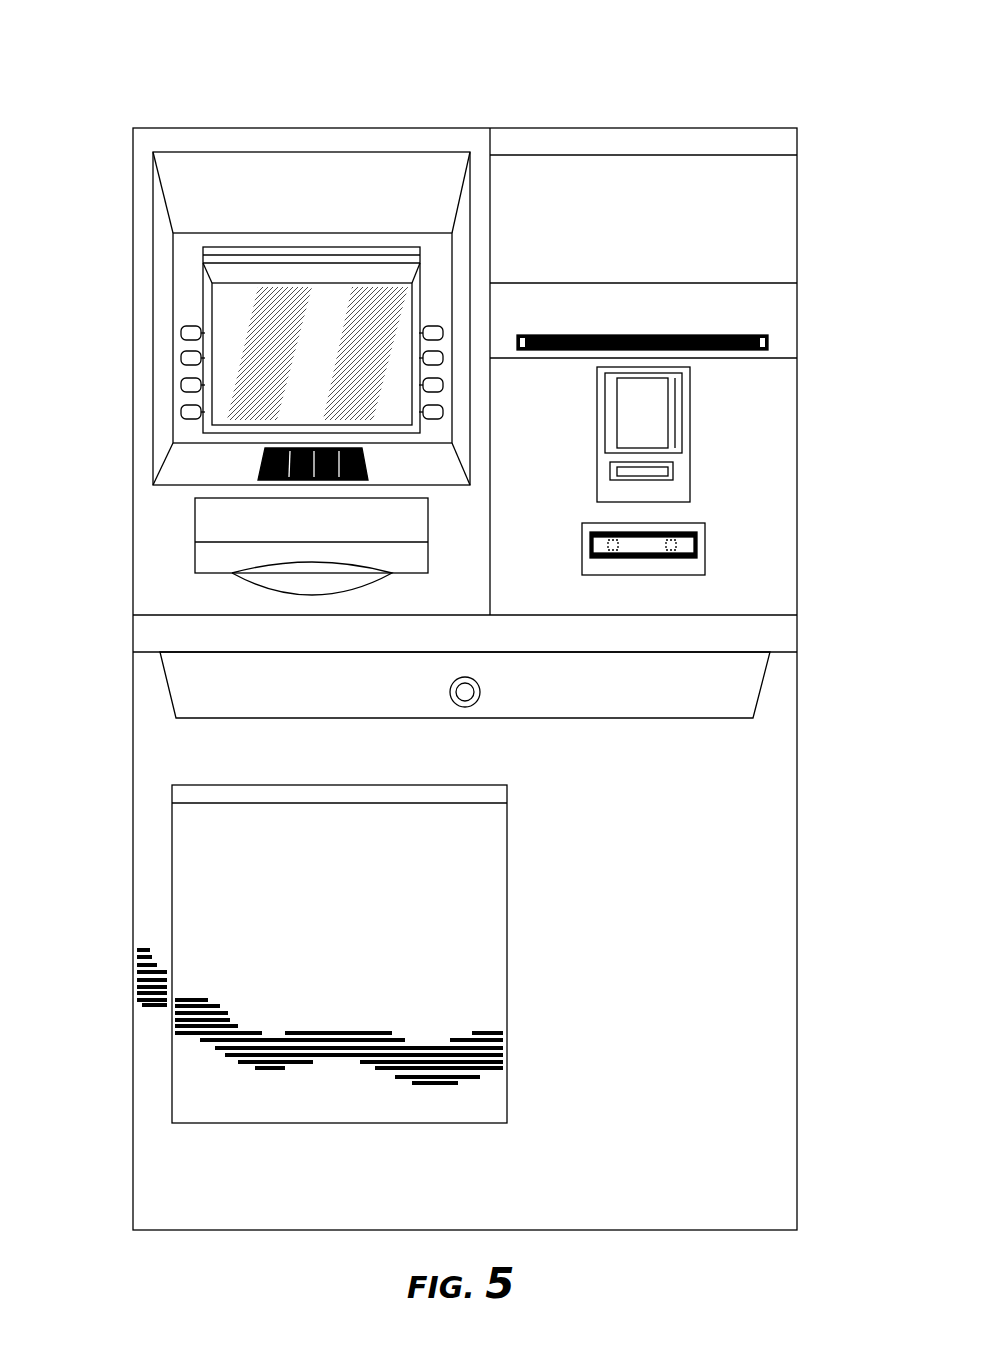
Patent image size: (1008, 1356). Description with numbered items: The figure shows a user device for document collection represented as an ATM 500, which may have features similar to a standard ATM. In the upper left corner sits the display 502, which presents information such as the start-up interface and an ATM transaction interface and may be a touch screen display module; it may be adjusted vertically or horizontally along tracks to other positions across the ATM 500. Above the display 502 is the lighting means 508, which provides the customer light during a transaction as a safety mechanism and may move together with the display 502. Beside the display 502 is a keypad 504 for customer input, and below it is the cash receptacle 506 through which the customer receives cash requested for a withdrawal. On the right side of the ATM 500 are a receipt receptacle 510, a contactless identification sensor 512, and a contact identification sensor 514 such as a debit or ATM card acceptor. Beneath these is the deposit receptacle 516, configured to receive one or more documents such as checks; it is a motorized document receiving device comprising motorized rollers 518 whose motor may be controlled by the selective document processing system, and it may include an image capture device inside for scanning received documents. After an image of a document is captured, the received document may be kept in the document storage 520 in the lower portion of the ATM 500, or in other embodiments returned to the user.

The ATM 500 is at (786, 88).
The display 502 is at (242, 312).
The keypad 504 is at (262, 478).
The cash receptacle 506 is at (193, 538).
The lighting means 508 is at (299, 182).
The receipt receptacle 510 is at (773, 342).
The contactless identification sensor 512 is at (684, 408).
The contact identification sensor 514 is at (684, 470).
The deposit receptacle 516 is at (701, 546).
The motorized rollers 518 is at (624, 556).
The document storage 520 is at (246, 966).